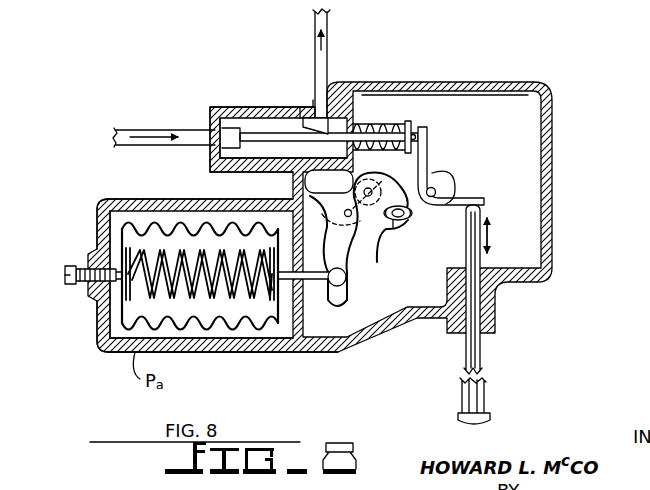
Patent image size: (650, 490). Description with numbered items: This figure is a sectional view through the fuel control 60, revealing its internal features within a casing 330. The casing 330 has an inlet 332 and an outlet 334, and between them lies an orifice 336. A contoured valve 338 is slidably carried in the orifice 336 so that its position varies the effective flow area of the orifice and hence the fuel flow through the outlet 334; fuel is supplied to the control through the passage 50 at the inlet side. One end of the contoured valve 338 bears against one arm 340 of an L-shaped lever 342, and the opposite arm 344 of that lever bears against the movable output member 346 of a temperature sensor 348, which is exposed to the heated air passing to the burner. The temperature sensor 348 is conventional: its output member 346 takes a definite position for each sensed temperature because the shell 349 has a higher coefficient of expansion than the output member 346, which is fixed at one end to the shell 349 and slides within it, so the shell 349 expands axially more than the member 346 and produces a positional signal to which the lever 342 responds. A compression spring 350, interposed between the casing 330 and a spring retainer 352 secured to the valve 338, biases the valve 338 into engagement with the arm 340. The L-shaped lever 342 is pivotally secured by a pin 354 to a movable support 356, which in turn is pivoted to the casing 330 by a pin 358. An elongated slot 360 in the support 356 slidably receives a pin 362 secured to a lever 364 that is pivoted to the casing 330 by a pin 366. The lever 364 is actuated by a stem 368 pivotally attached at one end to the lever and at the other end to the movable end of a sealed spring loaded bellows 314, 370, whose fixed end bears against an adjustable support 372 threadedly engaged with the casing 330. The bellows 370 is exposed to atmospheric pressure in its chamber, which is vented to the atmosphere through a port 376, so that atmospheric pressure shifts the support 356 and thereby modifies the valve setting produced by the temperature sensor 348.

The fluid passage / conduit 50 is at (327, 23).
The fuel control 60 is at (556, 98).
The bellows 314 is at (165, 222).
The casing 330 is at (550, 144).
The inlet 332 is at (215, 140).
The outlet 334 is at (313, 101).
The orifice 336 is at (368, 124).
The contoured valve 338 is at (237, 173).
The arm of L-shaped lever 340 is at (429, 137).
The L-shaped lever 342 is at (436, 186).
The opposite arm of L-shaped lever 344 is at (472, 200).
The movable output member 346 is at (480, 236).
The temperature sensor 348 is at (490, 423).
The shell 349 is at (486, 364).
The compression spring 350 is at (400, 82).
The spring retainer 352 is at (412, 122).
The pin 354 is at (409, 217).
The movable support 356 is at (402, 220).
The pin 358 is at (329, 181).
The elongated slot 360 is at (378, 238).
The pin 362 is at (394, 224).
The lever 364 is at (368, 262).
The pin 366 is at (345, 212).
The stem 368 is at (323, 262).
The sealed spring loaded bellows 370 is at (134, 312).
The adjustable support 372 is at (76, 268).
The port 376 is at (275, 352).